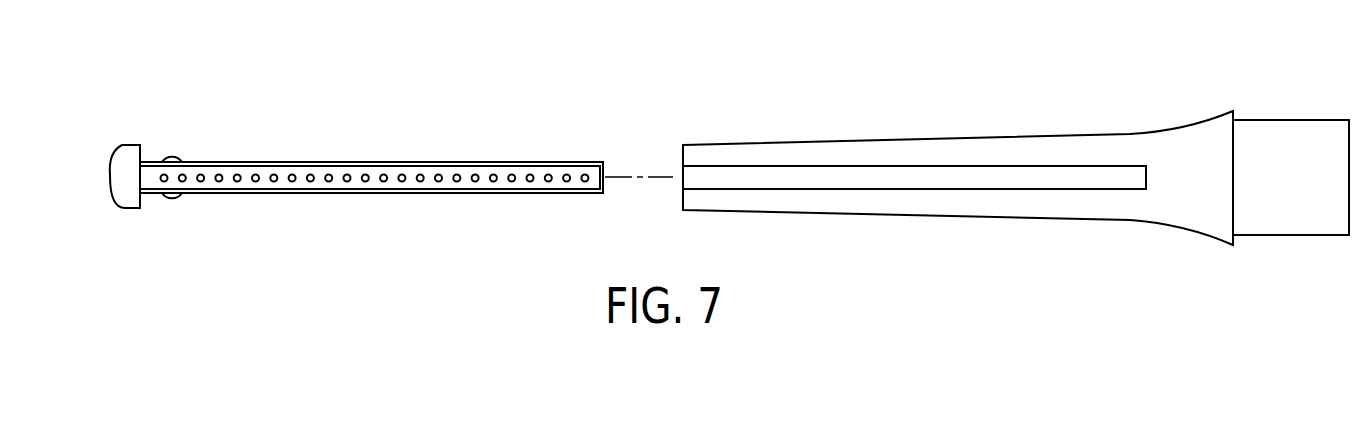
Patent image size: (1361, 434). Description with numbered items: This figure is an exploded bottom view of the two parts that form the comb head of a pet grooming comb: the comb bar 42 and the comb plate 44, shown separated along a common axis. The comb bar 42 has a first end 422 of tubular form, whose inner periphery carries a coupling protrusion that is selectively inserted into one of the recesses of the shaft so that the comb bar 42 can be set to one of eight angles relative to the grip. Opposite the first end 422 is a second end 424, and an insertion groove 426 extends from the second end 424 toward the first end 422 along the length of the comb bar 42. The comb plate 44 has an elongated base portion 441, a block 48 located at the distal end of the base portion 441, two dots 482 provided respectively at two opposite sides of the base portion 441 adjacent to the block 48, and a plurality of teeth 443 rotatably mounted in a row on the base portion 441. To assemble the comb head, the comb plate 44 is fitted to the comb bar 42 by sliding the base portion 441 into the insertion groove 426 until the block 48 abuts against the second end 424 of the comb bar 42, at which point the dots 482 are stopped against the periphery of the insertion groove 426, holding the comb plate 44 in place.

The comb bar 42 is at (1016, 123).
The first end 422 is at (1293, 152).
The second end 424 is at (720, 145).
The insertion groove 426 is at (896, 177).
The comb plate 44 is at (371, 141).
The base portion 441 is at (376, 162).
The teeth 443 is at (311, 181).
The block 48 is at (123, 160).
The dots 482 is at (172, 157).